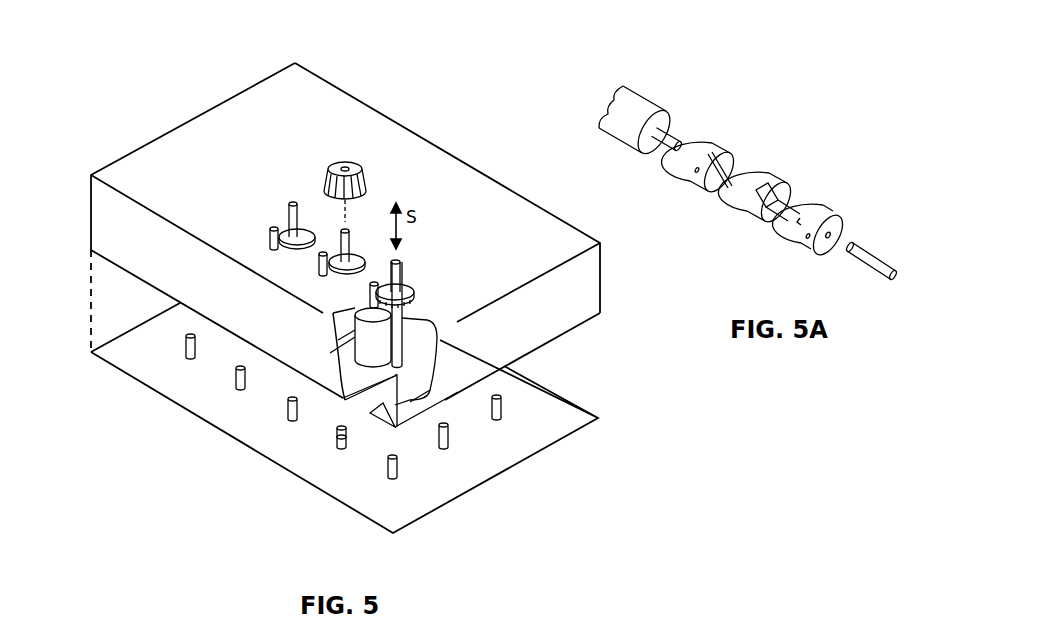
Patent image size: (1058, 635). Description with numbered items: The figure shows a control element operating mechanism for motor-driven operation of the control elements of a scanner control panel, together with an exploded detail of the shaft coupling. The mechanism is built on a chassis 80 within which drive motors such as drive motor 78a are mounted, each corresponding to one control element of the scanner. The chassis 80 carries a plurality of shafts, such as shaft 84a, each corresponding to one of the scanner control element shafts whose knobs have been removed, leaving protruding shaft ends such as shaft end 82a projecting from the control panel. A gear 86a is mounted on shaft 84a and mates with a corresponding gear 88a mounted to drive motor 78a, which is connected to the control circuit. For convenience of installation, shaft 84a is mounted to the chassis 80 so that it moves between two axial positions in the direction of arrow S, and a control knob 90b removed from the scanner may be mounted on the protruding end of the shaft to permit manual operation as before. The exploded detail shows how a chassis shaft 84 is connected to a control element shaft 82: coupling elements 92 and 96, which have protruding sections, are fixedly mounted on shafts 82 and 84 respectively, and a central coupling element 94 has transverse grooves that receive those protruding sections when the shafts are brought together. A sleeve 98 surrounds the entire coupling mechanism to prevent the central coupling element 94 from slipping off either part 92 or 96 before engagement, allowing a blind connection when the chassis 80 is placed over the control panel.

In FIG. 5, the chassis 80 is at (165, 135).
In FIG. 5, the control knob 90b is at (362, 168).
In FIG. 5, the gear 86a is at (405, 277).
In FIG. 5, the shaft 84a is at (402, 340).
In FIG. 5, the gear 88a is at (355, 300).
In FIG. 5, the drive motor 78a is at (350, 352).
In FIG. 5, the shaft end 82a is at (337, 439).
In FIG. 5A, the sleeve 98 is at (665, 115).
In FIG. 5A, the shaft 84 is at (668, 151).
In FIG. 5A, the coupling element 96 is at (720, 143).
In FIG. 5A, the central coupling element 94 is at (770, 173).
In FIG. 5A, the coupling element 92 is at (830, 207).
In FIG. 5A, the control element shaft 82 is at (880, 252).